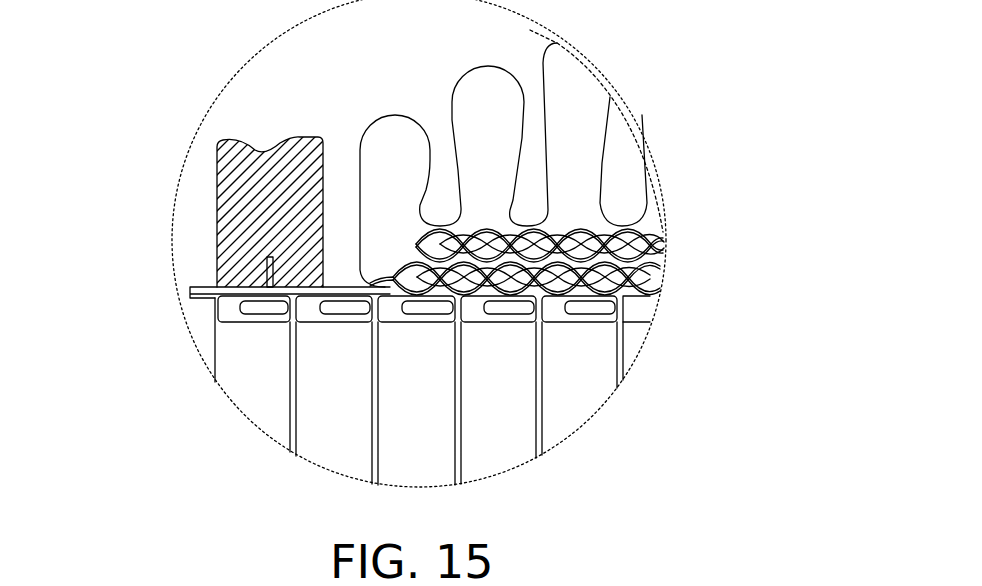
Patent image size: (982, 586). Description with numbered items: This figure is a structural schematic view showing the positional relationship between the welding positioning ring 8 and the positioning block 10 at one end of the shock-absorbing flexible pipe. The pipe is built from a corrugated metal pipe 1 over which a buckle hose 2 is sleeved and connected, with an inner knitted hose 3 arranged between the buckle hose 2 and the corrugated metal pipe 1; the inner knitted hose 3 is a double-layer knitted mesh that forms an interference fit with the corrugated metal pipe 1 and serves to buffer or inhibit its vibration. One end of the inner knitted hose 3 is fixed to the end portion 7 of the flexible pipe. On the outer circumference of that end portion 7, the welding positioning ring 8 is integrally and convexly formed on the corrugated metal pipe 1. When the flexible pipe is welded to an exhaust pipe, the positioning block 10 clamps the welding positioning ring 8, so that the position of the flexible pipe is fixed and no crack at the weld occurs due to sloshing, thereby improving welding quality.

The corrugated metal pipe 1 is at (550, 137).
The buckle hose 2 is at (500, 362).
The inner knitted hose 3 is at (613, 260).
The end portion 7 is at (200, 287).
The welding positioning ring 8 is at (268, 257).
The positioning block 10 is at (277, 198).